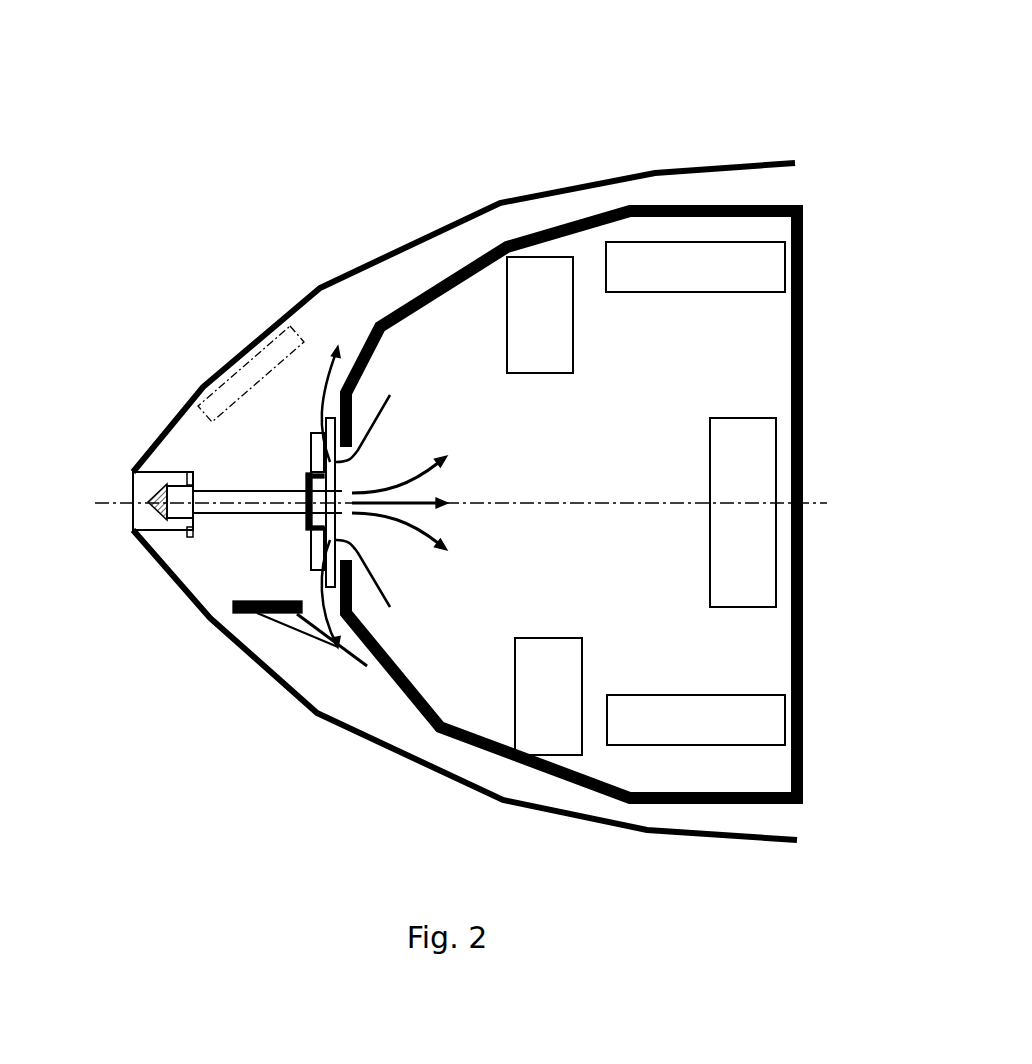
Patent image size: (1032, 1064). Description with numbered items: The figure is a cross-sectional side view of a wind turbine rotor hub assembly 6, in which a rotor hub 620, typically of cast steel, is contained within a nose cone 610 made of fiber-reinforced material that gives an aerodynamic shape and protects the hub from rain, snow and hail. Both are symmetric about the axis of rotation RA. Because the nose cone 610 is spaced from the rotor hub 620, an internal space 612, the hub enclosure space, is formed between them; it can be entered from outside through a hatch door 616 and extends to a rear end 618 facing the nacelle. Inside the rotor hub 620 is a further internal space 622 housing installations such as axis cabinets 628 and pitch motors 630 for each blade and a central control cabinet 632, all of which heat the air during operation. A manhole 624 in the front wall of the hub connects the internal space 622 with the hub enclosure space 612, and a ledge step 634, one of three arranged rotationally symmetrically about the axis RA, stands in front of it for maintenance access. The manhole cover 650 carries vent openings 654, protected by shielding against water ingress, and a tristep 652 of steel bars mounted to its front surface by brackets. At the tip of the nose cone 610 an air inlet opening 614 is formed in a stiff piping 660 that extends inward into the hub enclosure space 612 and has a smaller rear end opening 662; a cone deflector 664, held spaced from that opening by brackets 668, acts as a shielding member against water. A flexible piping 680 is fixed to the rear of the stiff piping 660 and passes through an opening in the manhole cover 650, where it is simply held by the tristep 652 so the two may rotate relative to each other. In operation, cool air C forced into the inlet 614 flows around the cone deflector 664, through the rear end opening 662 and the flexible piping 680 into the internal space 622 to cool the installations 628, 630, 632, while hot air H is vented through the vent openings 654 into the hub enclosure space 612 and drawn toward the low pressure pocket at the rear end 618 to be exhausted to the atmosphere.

The wind turbine rotor hub assembly 6 is at (441, 112).
The nose cone 610 is at (695, 166).
The internal space 612 is at (337, 312).
The air inlet opening 614 is at (117, 477).
The hatch door 616 is at (243, 373).
The rear end 618 is at (805, 178).
The rotor hub 620 is at (805, 313).
The internal space 622 is at (585, 444).
The manhole 624 is at (392, 448).
The axis cabinets 628 is at (675, 281).
The pitch motors 630 is at (520, 326).
The central control cabinet 632 is at (725, 559).
The ledge step 634 is at (250, 613).
The manhole cover 650 is at (337, 527).
The tristep 652 is at (308, 520).
The vent openings 654 is at (311, 448).
The stiff piping 660 is at (153, 470).
The rear end opening 662 is at (178, 515).
The cone deflector 664 is at (162, 500).
The brackets 668 is at (190, 470).
The flexible piping 680 is at (228, 490).
The hot air H is at (326, 400).
The cool air C is at (447, 500).
The axis of rotation RA is at (818, 502).